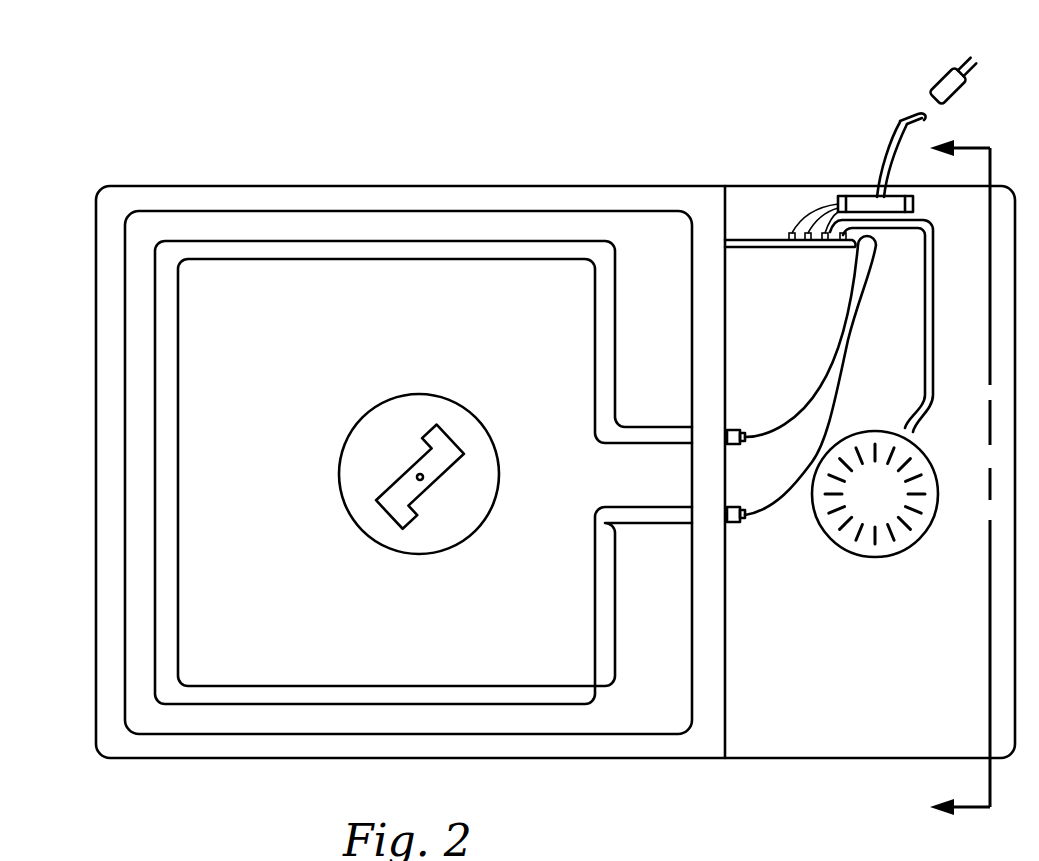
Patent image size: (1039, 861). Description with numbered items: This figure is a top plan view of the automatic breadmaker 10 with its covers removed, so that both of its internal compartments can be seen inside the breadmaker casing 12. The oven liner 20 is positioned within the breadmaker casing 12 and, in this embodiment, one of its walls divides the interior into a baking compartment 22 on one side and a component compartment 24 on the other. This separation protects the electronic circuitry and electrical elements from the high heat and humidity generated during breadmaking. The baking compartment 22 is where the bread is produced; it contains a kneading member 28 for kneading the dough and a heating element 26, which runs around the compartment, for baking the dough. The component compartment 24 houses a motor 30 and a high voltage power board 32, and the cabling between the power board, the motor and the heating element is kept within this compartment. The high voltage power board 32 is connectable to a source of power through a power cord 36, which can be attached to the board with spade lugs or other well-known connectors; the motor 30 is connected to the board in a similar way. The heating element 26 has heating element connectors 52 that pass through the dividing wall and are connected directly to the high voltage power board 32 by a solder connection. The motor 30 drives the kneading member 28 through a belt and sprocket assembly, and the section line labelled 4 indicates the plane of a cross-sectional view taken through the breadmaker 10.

The automatic breadmaker 10 is at (540, 112).
The breadmaker casing 12 is at (128, 186).
The oven liner 20 is at (290, 211).
The baking compartment 22 is at (204, 718).
The component compartment 24 is at (936, 672).
The heating element 26 is at (598, 663).
The kneading member 28 is at (440, 447).
The motor 30 is at (880, 557).
The high voltage power board 32 is at (767, 239).
The power cord 36 is at (940, 78).
The heating element connectors 52 is at (742, 508).
The section line 4- 4 is at (960, 479).